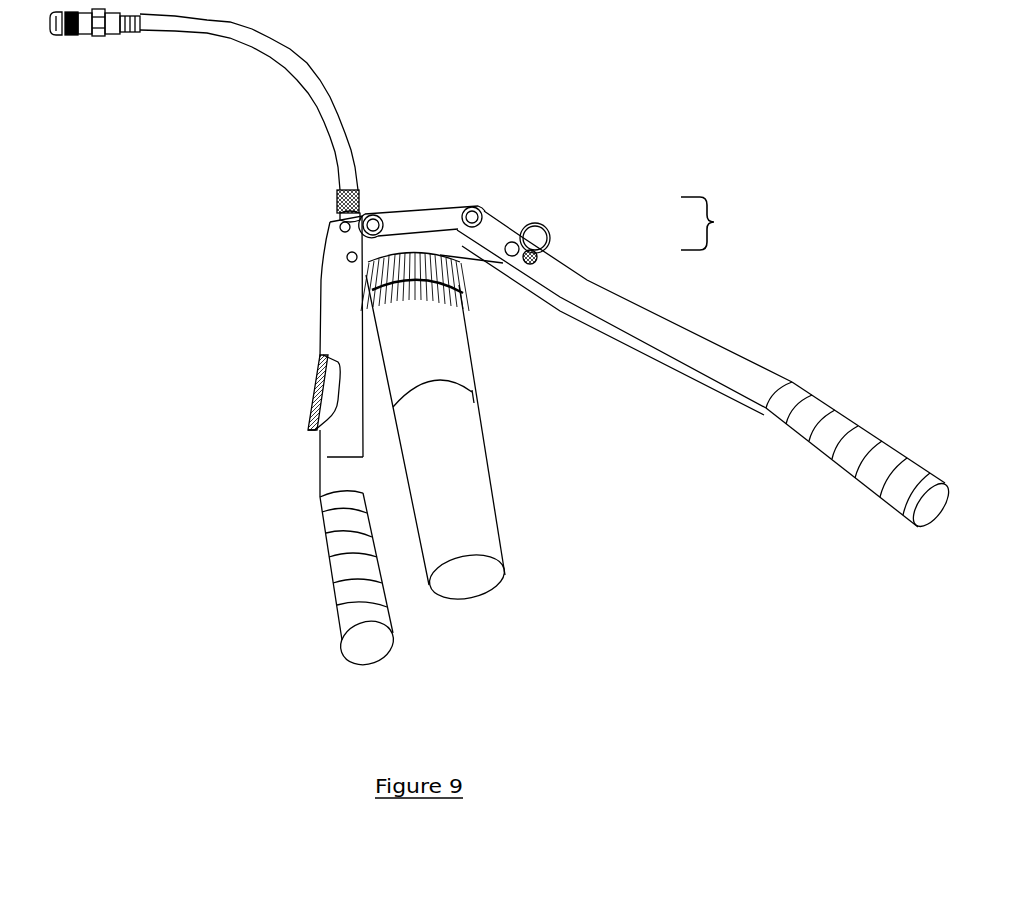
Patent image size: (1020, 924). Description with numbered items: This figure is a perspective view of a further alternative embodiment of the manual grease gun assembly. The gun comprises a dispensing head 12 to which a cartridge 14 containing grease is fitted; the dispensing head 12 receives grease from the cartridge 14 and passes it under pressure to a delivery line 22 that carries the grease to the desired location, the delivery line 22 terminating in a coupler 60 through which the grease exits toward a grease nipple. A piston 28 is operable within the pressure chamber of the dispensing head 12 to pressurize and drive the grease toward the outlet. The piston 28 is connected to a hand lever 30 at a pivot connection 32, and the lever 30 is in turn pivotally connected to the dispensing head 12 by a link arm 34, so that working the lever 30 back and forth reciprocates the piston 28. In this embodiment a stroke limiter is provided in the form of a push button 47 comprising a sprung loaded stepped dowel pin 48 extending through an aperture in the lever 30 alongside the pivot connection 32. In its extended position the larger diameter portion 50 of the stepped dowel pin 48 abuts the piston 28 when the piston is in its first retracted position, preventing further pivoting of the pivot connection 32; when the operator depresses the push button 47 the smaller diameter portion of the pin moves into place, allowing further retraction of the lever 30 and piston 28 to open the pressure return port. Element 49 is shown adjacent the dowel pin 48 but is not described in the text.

The dispensing head 12 is at (383, 245).
The cartridge 14 is at (452, 467).
The delivery line 22 is at (270, 62).
The piston 28 is at (457, 245).
The lever 30 is at (620, 305).
The pivot connection 32 is at (513, 232).
The link arm 34 is at (413, 216).
The push button 47 is at (714, 222).
The stepped dowel pin 48 is at (551, 240).
The bolt head 49 is at (553, 255).
The larger diameter portion 50 is at (497, 258).
The coupler 60 is at (78, 34).